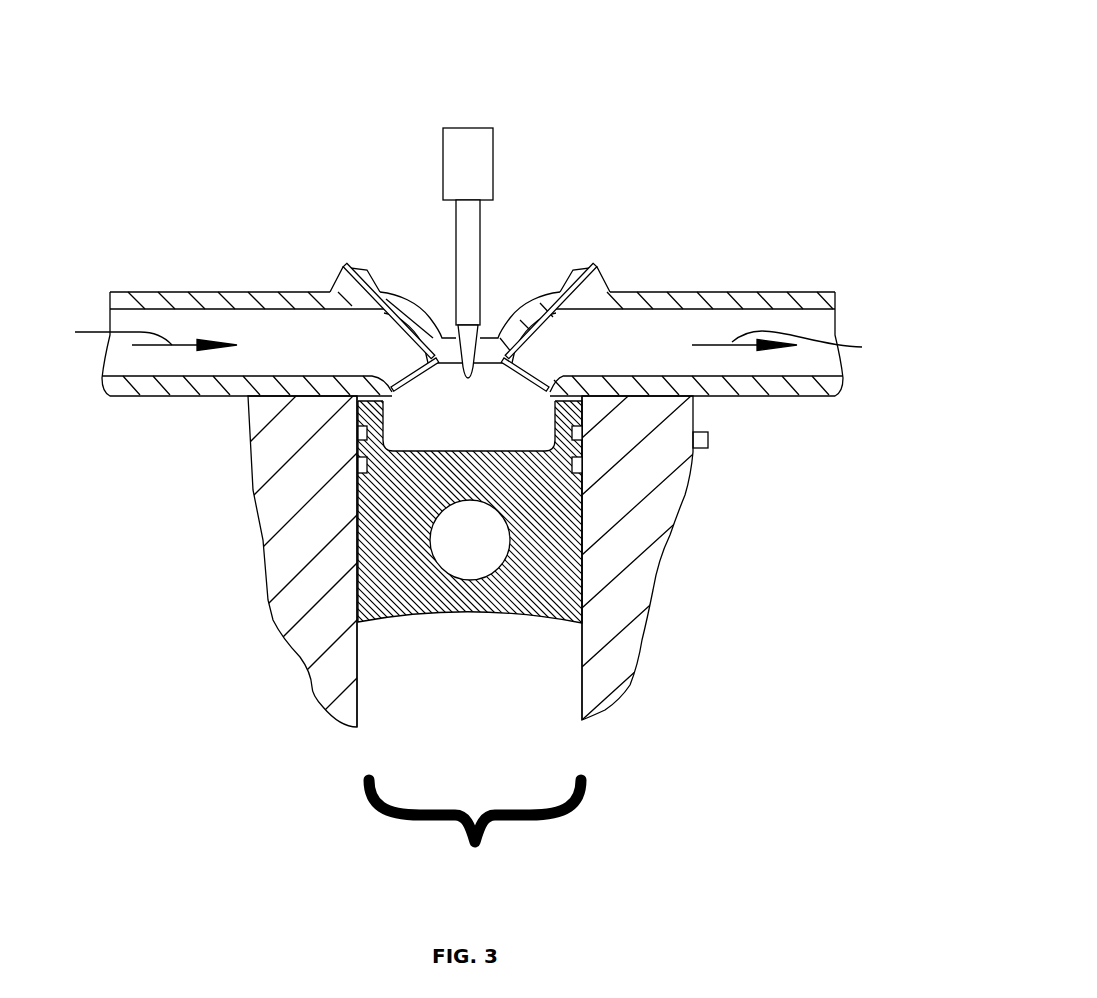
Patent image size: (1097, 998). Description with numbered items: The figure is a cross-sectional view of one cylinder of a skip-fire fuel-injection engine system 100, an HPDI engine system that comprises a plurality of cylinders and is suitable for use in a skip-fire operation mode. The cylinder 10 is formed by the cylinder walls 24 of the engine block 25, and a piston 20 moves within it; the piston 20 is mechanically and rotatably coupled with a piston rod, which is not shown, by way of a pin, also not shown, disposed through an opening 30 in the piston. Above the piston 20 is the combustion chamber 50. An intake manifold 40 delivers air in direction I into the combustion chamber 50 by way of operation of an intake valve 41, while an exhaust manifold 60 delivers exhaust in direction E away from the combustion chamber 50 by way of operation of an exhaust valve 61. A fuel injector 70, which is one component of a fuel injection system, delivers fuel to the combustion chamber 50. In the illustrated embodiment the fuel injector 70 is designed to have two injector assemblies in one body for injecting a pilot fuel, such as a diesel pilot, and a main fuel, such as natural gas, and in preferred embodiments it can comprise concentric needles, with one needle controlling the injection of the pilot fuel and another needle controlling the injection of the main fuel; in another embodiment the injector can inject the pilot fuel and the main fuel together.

The skip-fire fuel-injection engine system 100 is at (722, 120).
The fuel injector 70 is at (482, 256).
The intake manifold 40 is at (175, 292).
The intake valve 41 is at (344, 266).
The exhaust manifold 60 is at (772, 292).
The exhaust valve 61 is at (596, 266).
The combustion chamber 50 is at (452, 432).
The engine block 25 is at (252, 513).
The cylinder walls 24 is at (357, 670).
The opening 30 is at (473, 552).
The piston 20 is at (471, 616).
The cylinder 10 is at (475, 829).